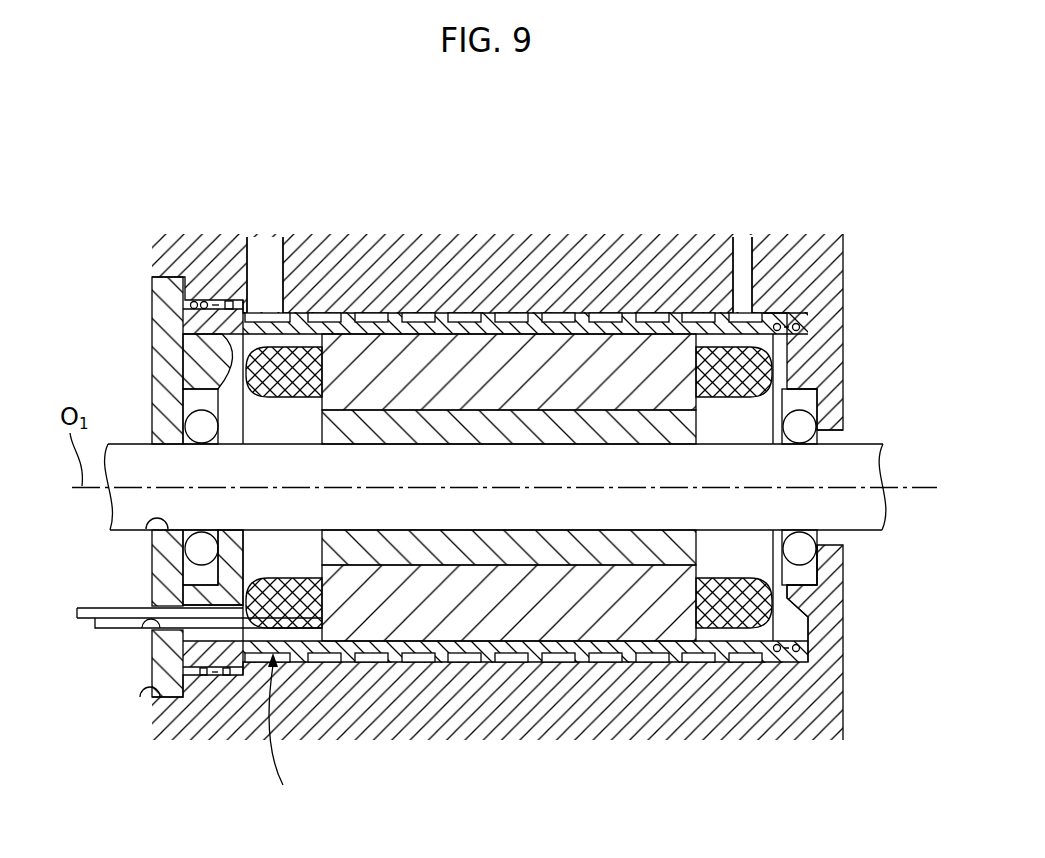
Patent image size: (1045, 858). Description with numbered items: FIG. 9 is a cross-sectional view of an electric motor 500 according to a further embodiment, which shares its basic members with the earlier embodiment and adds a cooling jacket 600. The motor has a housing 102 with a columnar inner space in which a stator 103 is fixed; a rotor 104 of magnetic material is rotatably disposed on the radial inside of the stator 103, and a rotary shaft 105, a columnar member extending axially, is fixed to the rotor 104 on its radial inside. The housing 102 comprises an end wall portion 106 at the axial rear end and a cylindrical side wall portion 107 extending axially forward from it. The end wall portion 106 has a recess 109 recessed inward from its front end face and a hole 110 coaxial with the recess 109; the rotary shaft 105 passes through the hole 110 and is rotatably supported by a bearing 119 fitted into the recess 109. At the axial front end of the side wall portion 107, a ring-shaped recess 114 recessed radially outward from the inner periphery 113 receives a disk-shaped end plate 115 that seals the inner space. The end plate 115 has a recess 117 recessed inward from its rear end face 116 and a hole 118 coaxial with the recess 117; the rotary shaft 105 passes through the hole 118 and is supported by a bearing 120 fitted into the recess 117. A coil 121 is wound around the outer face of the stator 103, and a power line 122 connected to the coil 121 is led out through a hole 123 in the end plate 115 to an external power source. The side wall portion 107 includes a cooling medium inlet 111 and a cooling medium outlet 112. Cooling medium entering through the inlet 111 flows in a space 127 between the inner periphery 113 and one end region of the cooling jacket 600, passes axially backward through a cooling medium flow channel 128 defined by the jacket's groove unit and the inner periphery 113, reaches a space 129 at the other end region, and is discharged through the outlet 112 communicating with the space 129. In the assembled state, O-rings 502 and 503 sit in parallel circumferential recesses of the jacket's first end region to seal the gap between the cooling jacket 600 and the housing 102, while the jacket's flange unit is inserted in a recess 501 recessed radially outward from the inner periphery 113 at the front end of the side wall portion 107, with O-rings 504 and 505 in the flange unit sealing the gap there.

The housing 102 is at (848, 261).
The stator 103 is at (410, 365).
The rotor 104 is at (450, 425).
The rotary shaft 105 is at (138, 443).
The end wall portion 106 is at (825, 615).
The side wall portion 107 is at (385, 705).
The recess 109 is at (808, 398).
The hole 110 is at (828, 440).
The cooling medium inlet 111 is at (283, 312).
The cooling medium outlet 112 is at (745, 300).
The inner periphery 113 is at (540, 330).
The ring-shaped recess 114 is at (147, 700).
The end plate 115 is at (162, 292).
The end face 116 is at (188, 343).
The recess 117 is at (155, 378).
The hole 118 is at (148, 531).
The bearing 119 is at (805, 570).
The bearing 120 is at (185, 563).
The coil 121 is at (302, 365).
The power line 122 is at (78, 608).
The hole 123 is at (143, 631).
The space 127 is at (261, 320).
The cooling medium flow channel 128 is at (466, 652).
The space 129 is at (705, 328).
The electric motor 500 is at (706, 145).
The recess 501 is at (177, 280).
The O-ring 502 is at (779, 323).
The O-ring 503 is at (797, 325).
The O-ring 504 is at (203, 677).
The O-ring 505 is at (226, 677).
The cooling jacket 600 is at (280, 732).